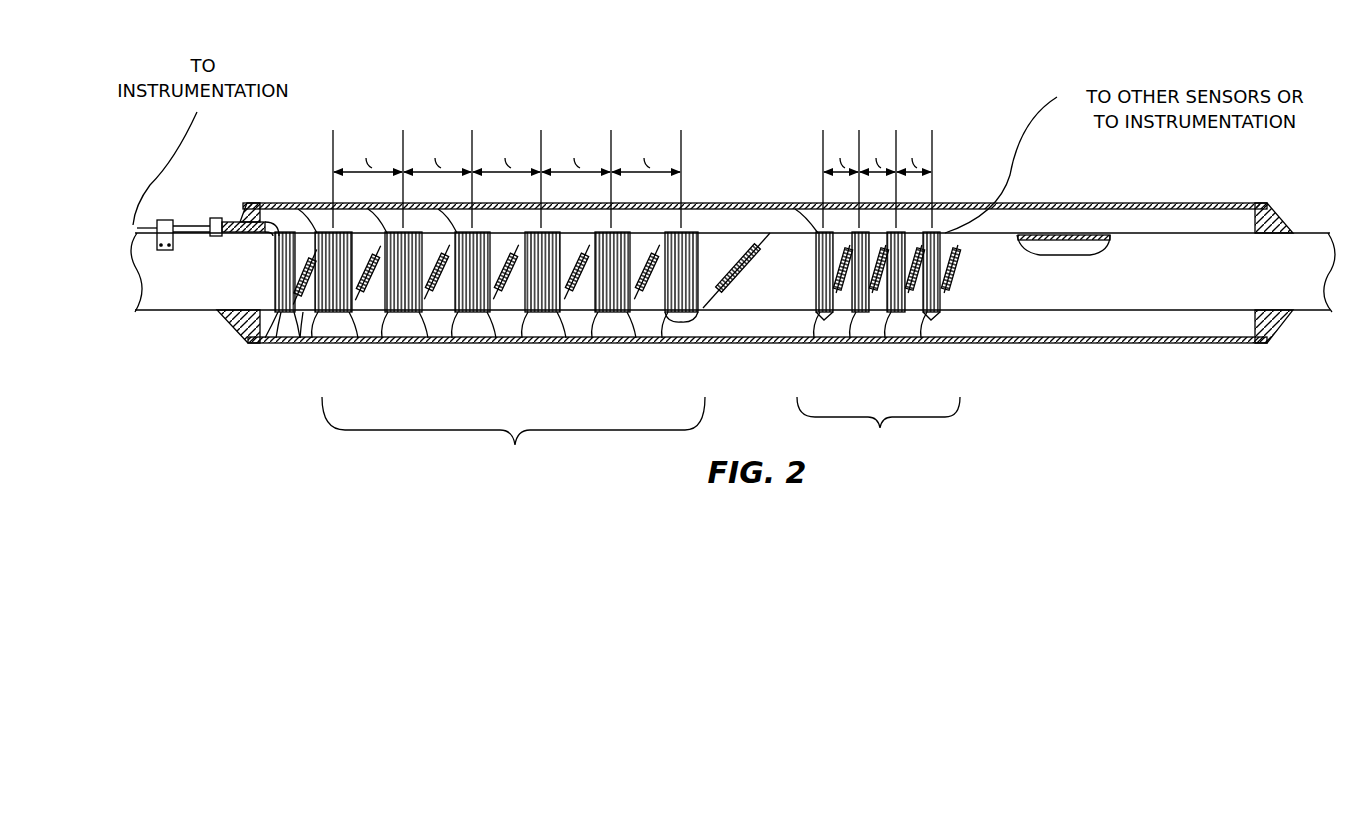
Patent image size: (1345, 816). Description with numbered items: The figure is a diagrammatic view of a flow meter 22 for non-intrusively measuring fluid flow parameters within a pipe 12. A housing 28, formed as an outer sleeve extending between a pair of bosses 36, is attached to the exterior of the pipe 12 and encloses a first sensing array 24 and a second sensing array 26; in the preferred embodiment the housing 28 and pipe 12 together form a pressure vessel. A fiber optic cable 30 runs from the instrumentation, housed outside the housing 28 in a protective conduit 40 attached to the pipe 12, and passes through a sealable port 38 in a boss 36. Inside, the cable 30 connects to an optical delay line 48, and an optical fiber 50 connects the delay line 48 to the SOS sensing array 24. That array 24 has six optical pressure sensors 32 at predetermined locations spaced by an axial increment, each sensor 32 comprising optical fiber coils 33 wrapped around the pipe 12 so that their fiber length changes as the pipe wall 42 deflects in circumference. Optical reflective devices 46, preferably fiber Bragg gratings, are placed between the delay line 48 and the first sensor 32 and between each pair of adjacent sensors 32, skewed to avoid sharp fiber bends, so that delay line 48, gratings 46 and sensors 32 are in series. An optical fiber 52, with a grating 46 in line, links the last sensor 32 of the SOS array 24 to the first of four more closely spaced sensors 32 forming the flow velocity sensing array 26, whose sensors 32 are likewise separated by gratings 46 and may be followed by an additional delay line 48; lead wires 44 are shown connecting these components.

The pipe 12 is at (148, 312).
The flow meter 22 is at (740, 103).
The first sensing array 24 is at (513, 441).
The second sensing array 26 is at (878, 428).
The housing 28 is at (1067, 343).
The fiber optic cable 30 is at (137, 232).
The optical pressure sensor 32 is at (393, 318).
The optical fiber coil 33 is at (681, 322).
The boss 36 is at (235, 335).
The sealable port 38 is at (222, 222).
The protective conduit 40 is at (190, 225).
The pipe wall 42 is at (1088, 235).
The lead wire 44 is at (402, 312).
The optical reflective device 46 is at (296, 300).
The optical delay line 48 is at (276, 338).
The optical fiber 50 is at (300, 338).
The optical fiber 52 is at (705, 300).